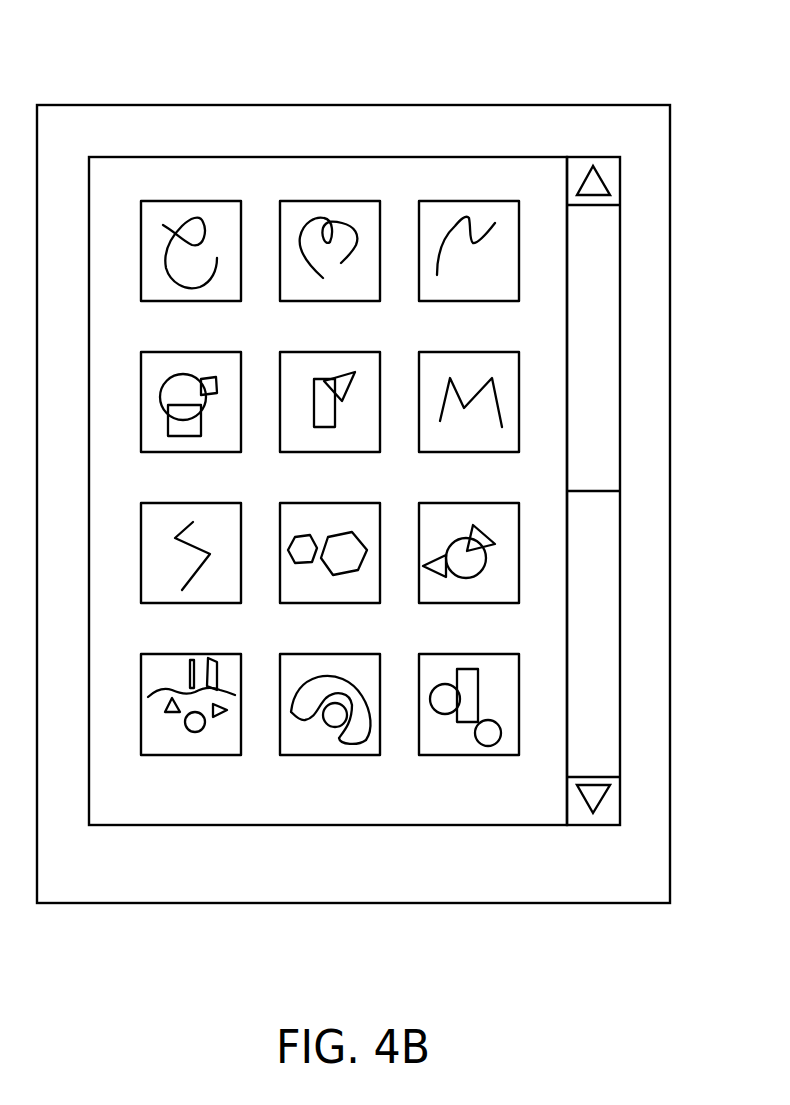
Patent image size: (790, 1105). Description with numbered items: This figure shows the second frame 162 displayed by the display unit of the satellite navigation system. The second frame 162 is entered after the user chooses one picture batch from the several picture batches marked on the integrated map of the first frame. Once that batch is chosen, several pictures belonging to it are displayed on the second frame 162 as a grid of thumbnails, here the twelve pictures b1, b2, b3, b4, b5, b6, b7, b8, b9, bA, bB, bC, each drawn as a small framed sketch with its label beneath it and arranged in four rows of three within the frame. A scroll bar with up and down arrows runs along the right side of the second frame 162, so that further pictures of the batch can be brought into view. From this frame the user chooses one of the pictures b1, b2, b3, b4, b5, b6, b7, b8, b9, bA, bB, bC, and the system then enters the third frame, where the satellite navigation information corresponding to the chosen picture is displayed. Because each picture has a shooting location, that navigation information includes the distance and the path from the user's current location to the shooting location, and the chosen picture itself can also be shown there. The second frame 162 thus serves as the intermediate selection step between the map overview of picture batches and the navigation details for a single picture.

The second frame 162 is at (681, 51).
The picture b1 is at (191, 267).
The picture b2 is at (330, 267).
The picture b3 is at (469, 267).
The picture b4 is at (191, 418).
The picture b5 is at (330, 418).
The picture b6 is at (469, 418).
The picture b7 is at (191, 569).
The picture b8 is at (330, 569).
The picture b9 is at (469, 569).
The picture bA is at (191, 720).
The picture bB is at (330, 720).
The picture bC is at (469, 720).